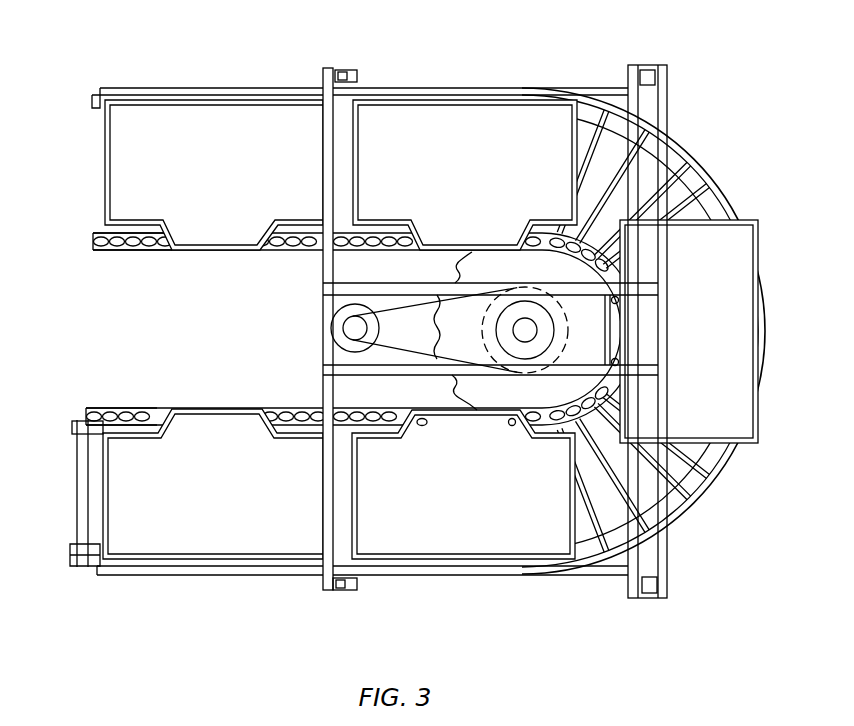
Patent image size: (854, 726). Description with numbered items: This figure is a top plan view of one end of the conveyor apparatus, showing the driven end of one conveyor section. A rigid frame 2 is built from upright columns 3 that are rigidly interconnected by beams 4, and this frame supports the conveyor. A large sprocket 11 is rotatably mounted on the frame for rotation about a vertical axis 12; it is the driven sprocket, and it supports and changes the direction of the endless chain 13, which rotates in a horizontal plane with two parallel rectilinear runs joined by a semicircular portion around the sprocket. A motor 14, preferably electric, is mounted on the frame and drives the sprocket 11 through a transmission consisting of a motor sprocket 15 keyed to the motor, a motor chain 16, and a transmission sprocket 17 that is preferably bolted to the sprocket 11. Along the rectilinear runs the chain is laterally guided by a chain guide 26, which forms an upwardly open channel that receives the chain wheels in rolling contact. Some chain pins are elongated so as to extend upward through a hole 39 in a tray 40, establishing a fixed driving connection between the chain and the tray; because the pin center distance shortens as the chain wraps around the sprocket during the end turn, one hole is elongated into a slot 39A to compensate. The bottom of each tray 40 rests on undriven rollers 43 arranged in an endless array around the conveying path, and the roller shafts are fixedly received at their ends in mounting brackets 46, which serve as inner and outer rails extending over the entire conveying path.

The frame 2 is at (688, 70).
The column 3 is at (347, 69).
The beam 4 is at (252, 86).
The sprocket 11 is at (526, 277).
The vertical axis 12 is at (533, 332).
The chain 13 is at (118, 244).
The motor 14 is at (341, 343).
The motor sprocket 15 is at (352, 326).
The motor chain 16 is at (392, 348).
The transmission sprocket 17 is at (484, 337).
The chain guide 26 is at (97, 252).
The hole 39 is at (512, 426).
The slot 39A is at (427, 426).
The tray 40 is at (200, 178).
The roller 43 is at (80, 485).
The mounting bracket 46 is at (72, 430).